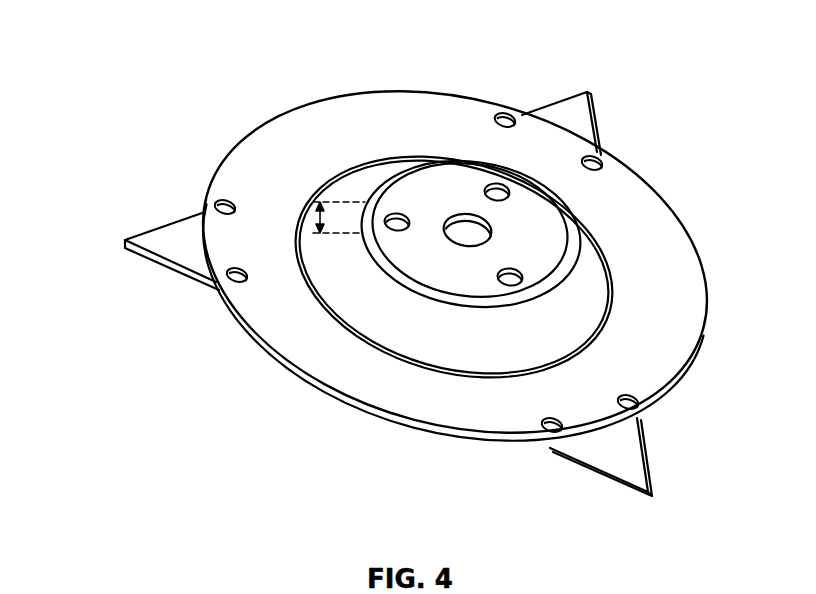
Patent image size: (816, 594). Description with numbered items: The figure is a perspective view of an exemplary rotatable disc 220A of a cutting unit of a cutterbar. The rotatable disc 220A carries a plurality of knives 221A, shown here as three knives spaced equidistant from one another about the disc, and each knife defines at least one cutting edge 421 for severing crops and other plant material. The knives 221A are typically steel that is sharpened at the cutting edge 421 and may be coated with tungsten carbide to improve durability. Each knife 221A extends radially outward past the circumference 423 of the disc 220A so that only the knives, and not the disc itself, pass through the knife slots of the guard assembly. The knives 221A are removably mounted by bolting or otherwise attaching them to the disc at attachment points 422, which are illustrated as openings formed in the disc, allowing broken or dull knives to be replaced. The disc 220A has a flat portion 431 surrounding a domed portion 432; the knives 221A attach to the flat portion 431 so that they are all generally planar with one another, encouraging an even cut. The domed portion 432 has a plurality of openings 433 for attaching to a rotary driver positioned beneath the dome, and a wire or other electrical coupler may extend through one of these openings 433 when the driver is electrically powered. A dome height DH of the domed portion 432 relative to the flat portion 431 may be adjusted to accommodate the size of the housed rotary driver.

The rotatable disc 220A is at (628, 105).
The knives 221A is at (412, 279).
The cutting edge 421 is at (190, 213).
The attachment points 422 is at (227, 200).
The circumference 423 is at (368, 413).
The flat portion 431 is at (277, 160).
The domed portion 432 is at (394, 150).
The openings 433 is at (496, 182).
The dome height DH is at (344, 252).